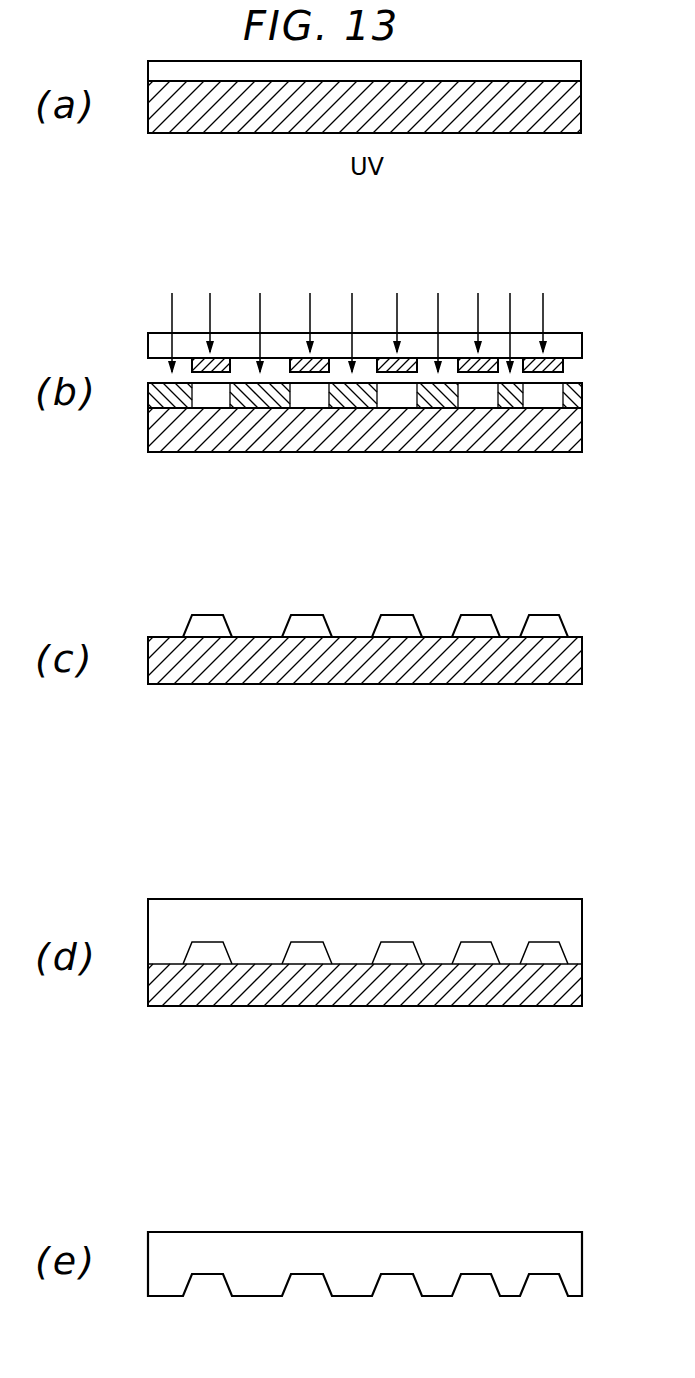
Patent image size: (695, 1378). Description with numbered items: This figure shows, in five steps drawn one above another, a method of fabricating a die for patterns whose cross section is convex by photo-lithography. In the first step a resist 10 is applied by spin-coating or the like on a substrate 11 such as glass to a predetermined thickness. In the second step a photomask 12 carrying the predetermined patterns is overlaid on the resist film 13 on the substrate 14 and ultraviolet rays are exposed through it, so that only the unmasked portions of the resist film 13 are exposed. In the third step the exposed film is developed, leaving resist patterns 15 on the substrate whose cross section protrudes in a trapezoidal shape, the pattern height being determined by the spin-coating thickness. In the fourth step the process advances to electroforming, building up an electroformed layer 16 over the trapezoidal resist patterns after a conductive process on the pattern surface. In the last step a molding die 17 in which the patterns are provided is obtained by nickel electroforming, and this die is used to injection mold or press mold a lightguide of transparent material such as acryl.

The photoresist layer 10 is at (581, 68).
The substrate 11 is at (574, 108).
The photomask 12 is at (582, 338).
The exposed photoresist layer 13 is at (577, 397).
The substrate 14 is at (547, 397).
The resist pattern 15 is at (555, 620).
The electroformed layer 16 is at (600, 922).
The molding die 17 is at (575, 1260).